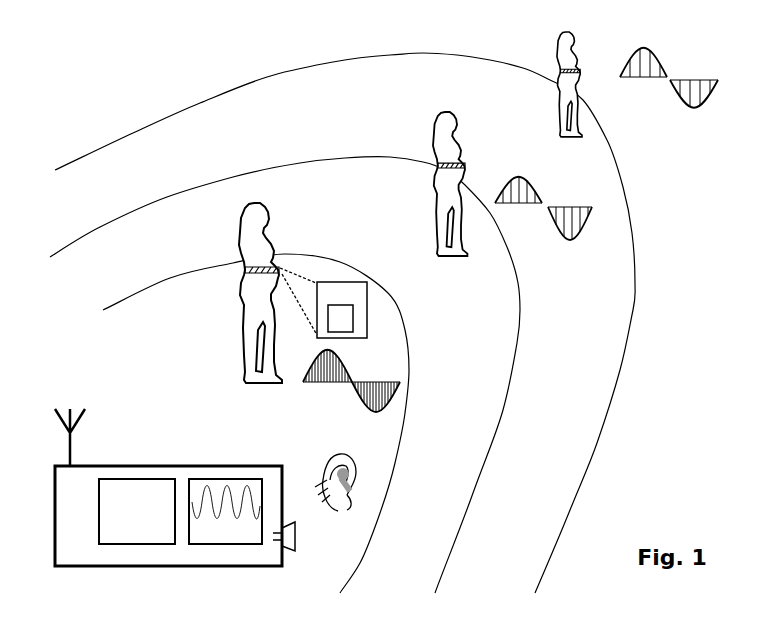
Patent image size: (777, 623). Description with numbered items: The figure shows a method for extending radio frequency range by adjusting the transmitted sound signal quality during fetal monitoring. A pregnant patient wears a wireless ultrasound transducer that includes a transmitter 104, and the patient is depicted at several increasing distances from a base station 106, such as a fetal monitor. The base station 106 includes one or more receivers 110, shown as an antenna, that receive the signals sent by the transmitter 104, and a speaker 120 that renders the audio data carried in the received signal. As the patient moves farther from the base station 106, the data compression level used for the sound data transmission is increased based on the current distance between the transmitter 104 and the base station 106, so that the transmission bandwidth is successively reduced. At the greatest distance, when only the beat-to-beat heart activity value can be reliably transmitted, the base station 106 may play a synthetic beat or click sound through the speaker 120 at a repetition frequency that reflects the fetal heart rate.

The transmitter 104 is at (340, 318).
The base station 106 is at (181, 496).
The receiver 110 is at (68, 452).
The speaker 120 is at (292, 551).